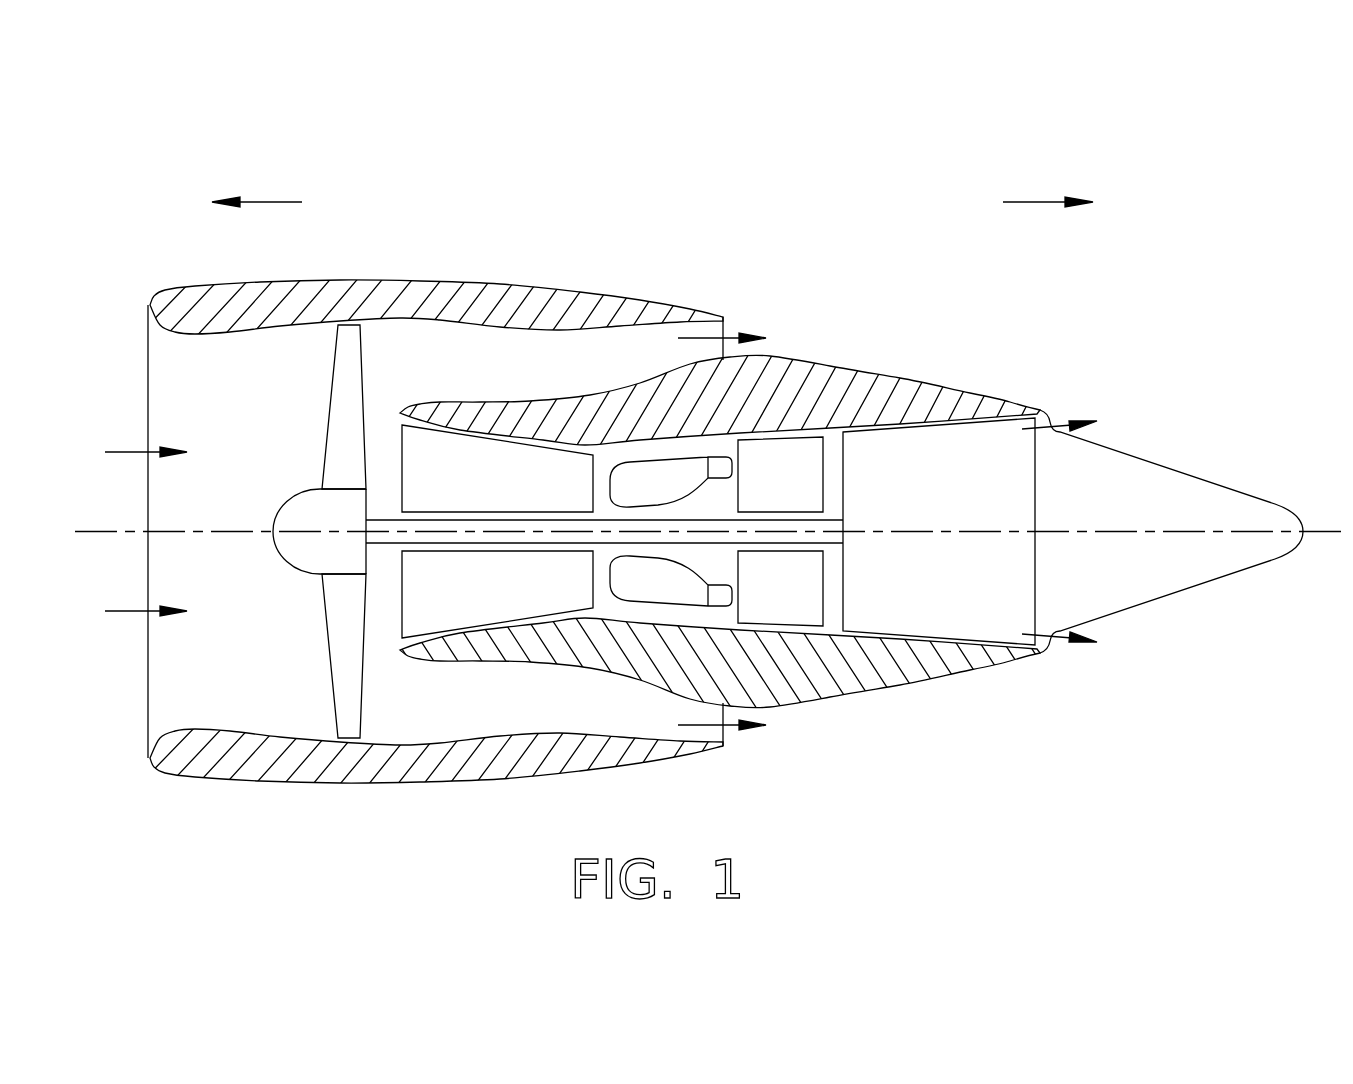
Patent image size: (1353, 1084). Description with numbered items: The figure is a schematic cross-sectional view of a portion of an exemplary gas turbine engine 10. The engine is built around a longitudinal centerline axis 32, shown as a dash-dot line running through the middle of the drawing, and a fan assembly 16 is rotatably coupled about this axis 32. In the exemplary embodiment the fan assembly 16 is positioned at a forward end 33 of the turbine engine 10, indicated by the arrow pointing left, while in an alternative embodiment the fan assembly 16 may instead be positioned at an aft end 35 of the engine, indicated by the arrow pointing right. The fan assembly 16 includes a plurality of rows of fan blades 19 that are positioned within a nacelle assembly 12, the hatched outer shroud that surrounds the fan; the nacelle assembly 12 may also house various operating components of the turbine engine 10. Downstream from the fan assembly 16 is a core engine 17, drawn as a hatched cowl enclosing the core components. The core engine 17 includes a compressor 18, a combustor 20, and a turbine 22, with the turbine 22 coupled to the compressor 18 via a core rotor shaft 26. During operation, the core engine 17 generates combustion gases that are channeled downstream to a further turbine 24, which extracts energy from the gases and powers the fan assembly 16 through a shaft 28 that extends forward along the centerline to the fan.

The turbine engine 10 is at (772, 230).
The nacelle assembly 12 is at (170, 333).
The fan assembly 16 is at (362, 531).
The core engine 17 is at (846, 320).
The compressor 18 is at (477, 482).
The fan blades 19 is at (340, 430).
The combustor 20 is at (657, 592).
The turbine 22 is at (801, 494).
The turbine 24 is at (972, 496).
The core rotor shaft 26 is at (610, 500).
The shaft 28 is at (834, 545).
The longitudinal centerline axis 32 is at (170, 530).
The forward end 33 is at (268, 200).
The aft end 35 is at (1034, 202).